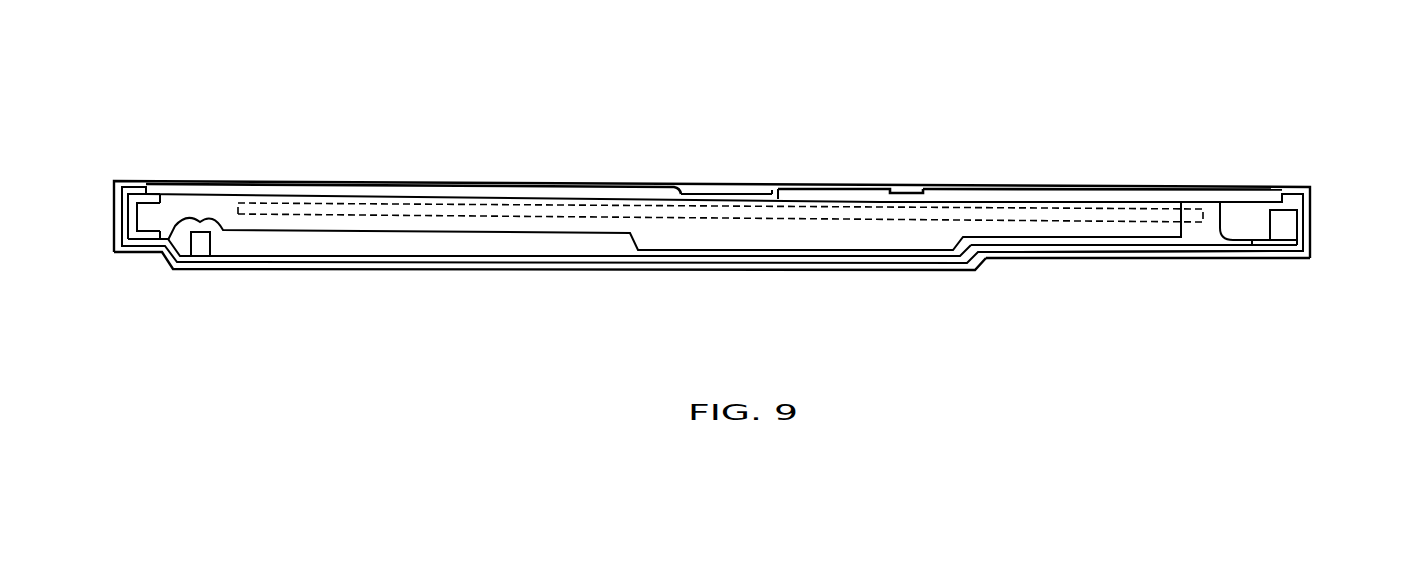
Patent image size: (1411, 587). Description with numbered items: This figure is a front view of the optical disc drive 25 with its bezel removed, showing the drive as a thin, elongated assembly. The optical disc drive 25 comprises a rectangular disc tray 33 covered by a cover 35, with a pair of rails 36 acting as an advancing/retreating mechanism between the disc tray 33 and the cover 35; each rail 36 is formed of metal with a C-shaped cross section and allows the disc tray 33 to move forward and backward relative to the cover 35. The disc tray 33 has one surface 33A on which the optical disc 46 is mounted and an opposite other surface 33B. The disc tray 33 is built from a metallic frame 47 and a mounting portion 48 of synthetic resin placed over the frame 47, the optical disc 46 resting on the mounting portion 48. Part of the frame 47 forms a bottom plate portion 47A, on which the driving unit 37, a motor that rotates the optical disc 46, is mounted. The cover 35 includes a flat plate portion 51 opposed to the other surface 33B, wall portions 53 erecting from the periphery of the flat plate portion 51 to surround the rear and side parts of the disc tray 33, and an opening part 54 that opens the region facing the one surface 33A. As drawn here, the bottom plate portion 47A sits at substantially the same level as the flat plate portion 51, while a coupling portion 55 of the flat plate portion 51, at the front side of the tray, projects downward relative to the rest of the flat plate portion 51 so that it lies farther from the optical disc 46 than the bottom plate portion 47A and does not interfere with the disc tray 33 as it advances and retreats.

The optical disc drive 25 is at (708, 108).
The disc tray 33 is at (1138, 192).
The one surface 33A is at (1065, 190).
The other surface 33B is at (1052, 246).
The cover 35 is at (1228, 259).
The rails 36 is at (137, 214).
The driving unit 37 is at (757, 192).
The optical disc 46 is at (812, 205).
The frame 47 is at (975, 237).
The bottom plate portion 47A is at (718, 257).
The mounting portion 48 is at (617, 192).
The flat plate portion 51 is at (1158, 259).
The wall portions 53 is at (440, 188).
The opening part 54 is at (328, 178).
The coupling portion 55 is at (545, 271).